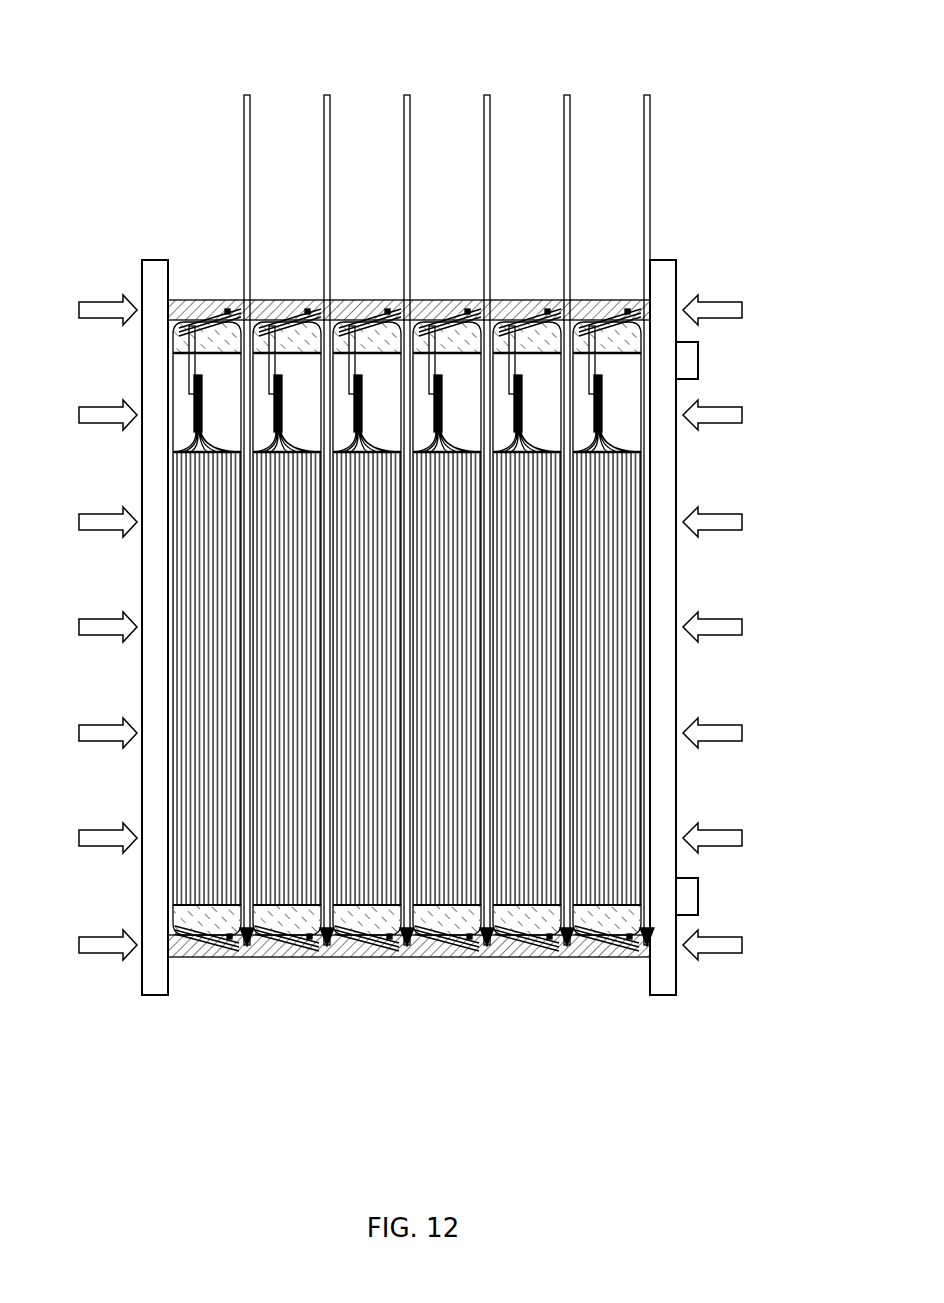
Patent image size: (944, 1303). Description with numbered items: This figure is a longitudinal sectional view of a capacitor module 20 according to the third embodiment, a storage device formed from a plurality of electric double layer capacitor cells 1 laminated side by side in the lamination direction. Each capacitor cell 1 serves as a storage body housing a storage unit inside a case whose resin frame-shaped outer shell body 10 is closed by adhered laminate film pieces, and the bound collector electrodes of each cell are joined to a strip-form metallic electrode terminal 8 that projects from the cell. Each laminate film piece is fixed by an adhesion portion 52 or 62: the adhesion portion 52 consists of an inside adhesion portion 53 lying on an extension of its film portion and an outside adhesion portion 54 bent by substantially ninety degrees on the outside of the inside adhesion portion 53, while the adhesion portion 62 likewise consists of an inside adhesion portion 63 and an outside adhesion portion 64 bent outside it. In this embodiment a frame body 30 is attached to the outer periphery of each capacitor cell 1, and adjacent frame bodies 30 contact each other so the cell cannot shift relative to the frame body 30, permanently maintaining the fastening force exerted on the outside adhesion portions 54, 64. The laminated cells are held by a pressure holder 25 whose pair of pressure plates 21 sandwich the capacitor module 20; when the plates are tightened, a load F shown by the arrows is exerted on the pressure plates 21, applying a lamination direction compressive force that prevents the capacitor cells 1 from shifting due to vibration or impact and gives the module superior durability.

The electric double layer capacitor cell 1 is at (352, 958).
The electrode terminal 8 is at (572, 258).
The outer shell body 10 is at (316, 298).
The capacitor module 20 is at (413, 554).
The pressure plate 21 is at (148, 446).
The pressure holder 25 is at (682, 274).
The frame body 30 is at (271, 298).
The adhesion portion 52 is at (408, 557).
The inside adhesion portion 53 is at (383, 298).
The outside adhesion portion 54 is at (437, 298).
The adhesion portion 62 is at (512, 557).
The inside adhesion portion 63 is at (510, 298).
The outside adhesion portion 64 is at (470, 298).
The load F is at (100, 526).